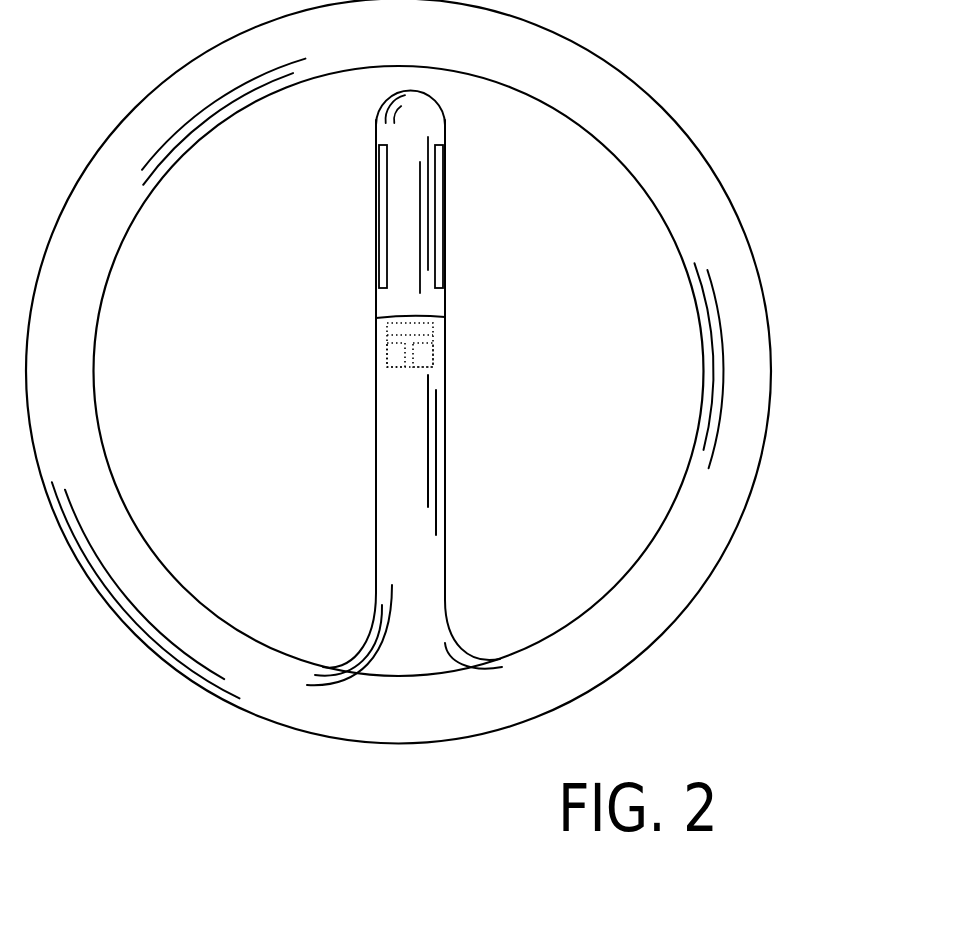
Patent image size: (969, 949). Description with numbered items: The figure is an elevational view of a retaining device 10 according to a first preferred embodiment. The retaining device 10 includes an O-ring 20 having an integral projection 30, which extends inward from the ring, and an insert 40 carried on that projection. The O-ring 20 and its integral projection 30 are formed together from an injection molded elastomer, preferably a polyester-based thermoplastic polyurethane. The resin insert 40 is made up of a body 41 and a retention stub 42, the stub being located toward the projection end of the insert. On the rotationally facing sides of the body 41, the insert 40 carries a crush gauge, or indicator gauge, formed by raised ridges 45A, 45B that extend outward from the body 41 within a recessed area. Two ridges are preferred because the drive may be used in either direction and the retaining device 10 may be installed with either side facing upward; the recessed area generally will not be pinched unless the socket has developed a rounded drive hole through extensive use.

The retaining device 10 is at (750, 143).
The O-ring 20 is at (752, 418).
The integral projection 30 is at (383, 522).
The insert 40 is at (437, 113).
The body 41 is at (387, 131).
The retention stub 42 is at (425, 327).
The raised ridge 45A is at (380, 207).
The raised ridge 45B is at (445, 207).